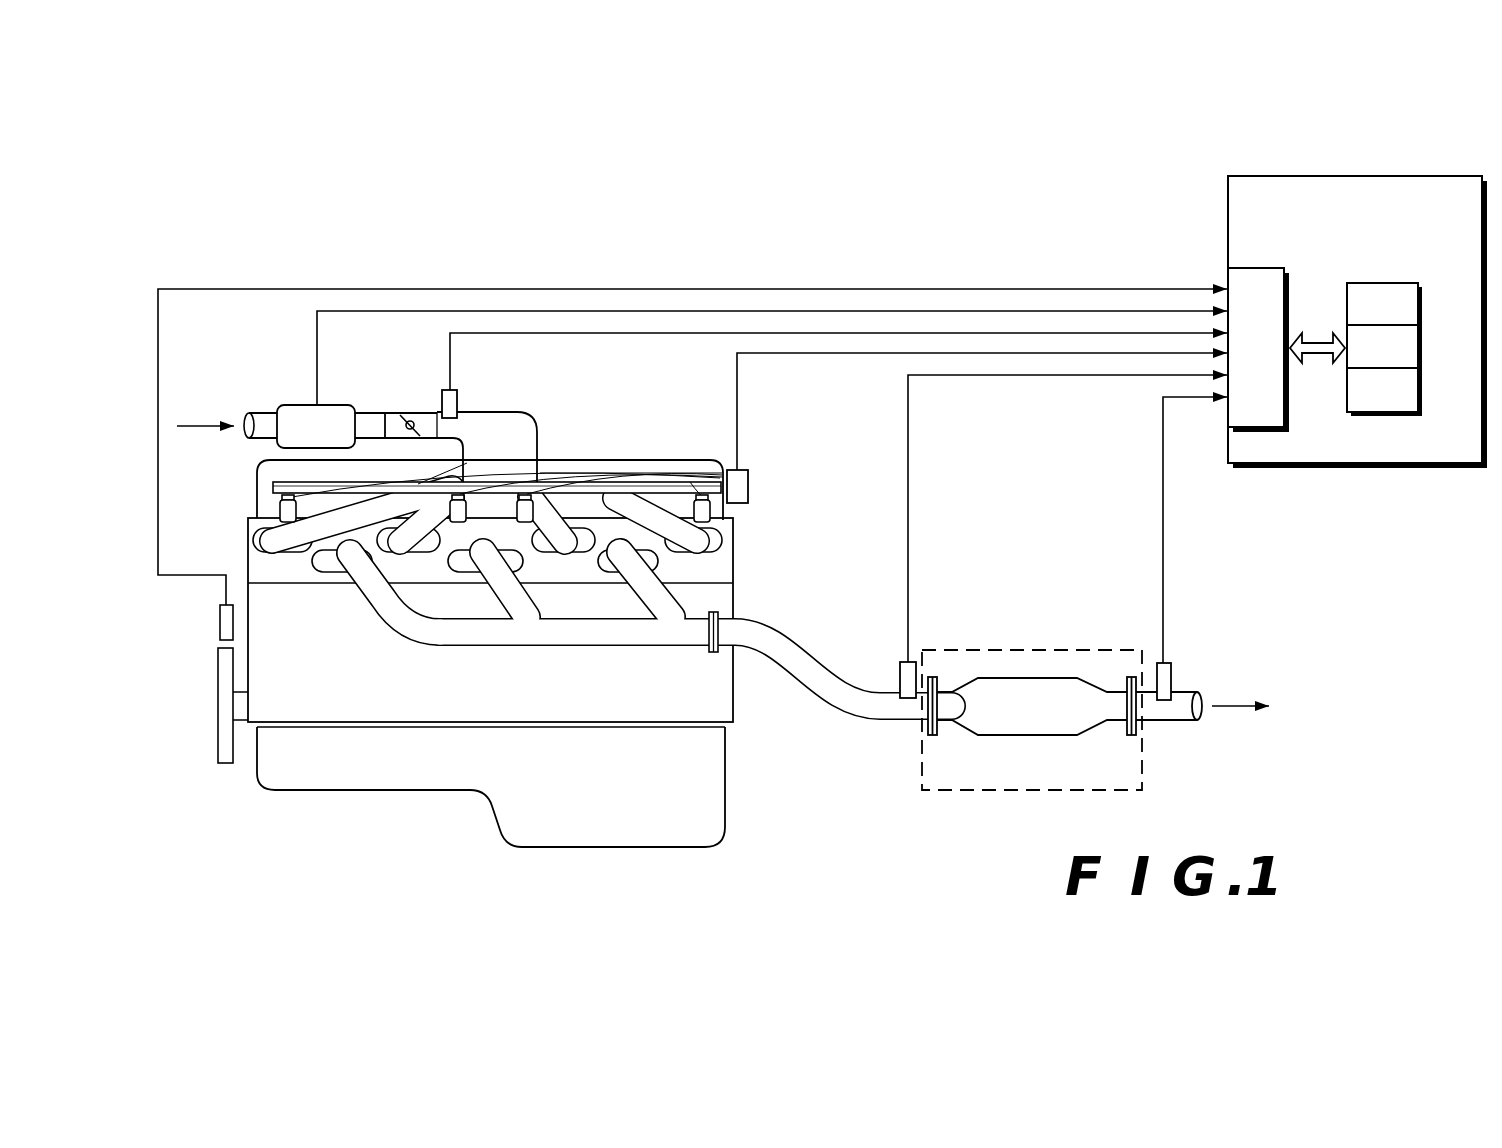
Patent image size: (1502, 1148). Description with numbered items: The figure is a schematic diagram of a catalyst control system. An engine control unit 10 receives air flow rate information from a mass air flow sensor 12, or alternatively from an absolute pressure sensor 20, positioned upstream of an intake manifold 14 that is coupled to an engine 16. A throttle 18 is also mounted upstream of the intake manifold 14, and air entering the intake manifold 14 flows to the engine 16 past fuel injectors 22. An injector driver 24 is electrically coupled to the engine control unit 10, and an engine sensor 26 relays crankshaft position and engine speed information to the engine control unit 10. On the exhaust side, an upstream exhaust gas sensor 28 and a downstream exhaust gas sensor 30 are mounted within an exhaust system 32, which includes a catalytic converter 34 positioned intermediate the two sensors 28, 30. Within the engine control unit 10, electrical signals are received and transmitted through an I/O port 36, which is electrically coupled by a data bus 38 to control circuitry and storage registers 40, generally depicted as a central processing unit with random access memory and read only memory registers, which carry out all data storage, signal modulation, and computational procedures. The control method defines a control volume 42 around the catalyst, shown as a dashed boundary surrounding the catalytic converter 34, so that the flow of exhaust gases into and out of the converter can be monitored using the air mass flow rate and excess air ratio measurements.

The engine control unit 10 is at (1357, 346).
The mass air flow sensor 12 is at (293, 405).
The intake manifold 14 is at (515, 427).
The engine 16 is at (712, 713).
The throttle 18 is at (408, 420).
The absolute pressure sensor 20 is at (458, 393).
The fuel injectors 22 is at (282, 498).
The injector driver 24 is at (750, 489).
The engine sensor 26 is at (218, 622).
The upstream exhaust gas sensor 28 is at (902, 663).
The downstream exhaust gas sensor 30 is at (1172, 660).
The exhaust system 32 is at (788, 634).
The catalytic converter 34 is at (1027, 740).
The I/O port 36 is at (1287, 420).
The data bus 38 is at (1314, 332).
The control circuitry and storage registers 40 is at (1420, 337).
The control volume 42 is at (1000, 648).